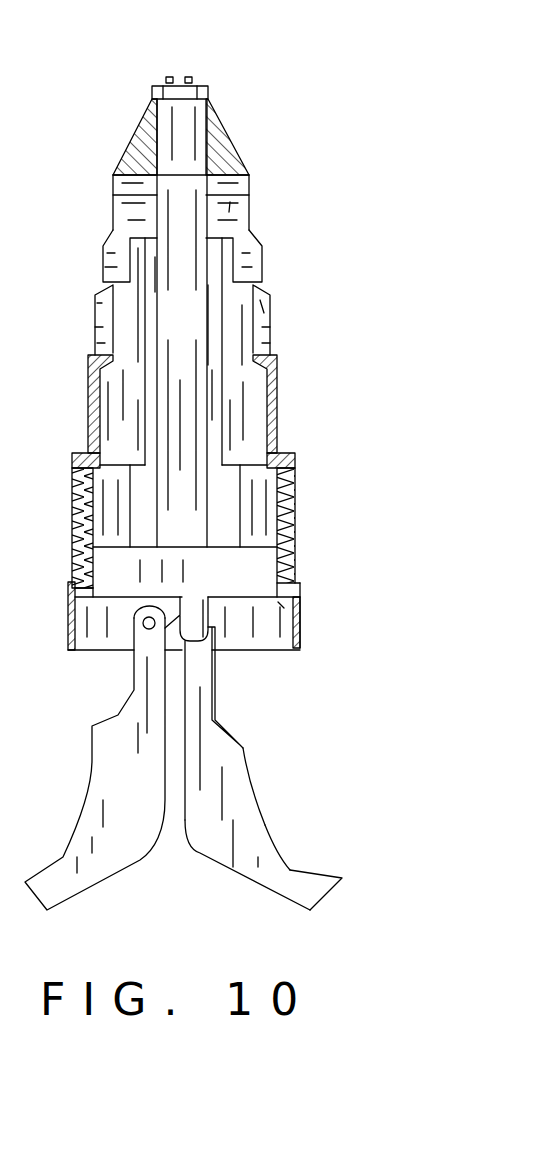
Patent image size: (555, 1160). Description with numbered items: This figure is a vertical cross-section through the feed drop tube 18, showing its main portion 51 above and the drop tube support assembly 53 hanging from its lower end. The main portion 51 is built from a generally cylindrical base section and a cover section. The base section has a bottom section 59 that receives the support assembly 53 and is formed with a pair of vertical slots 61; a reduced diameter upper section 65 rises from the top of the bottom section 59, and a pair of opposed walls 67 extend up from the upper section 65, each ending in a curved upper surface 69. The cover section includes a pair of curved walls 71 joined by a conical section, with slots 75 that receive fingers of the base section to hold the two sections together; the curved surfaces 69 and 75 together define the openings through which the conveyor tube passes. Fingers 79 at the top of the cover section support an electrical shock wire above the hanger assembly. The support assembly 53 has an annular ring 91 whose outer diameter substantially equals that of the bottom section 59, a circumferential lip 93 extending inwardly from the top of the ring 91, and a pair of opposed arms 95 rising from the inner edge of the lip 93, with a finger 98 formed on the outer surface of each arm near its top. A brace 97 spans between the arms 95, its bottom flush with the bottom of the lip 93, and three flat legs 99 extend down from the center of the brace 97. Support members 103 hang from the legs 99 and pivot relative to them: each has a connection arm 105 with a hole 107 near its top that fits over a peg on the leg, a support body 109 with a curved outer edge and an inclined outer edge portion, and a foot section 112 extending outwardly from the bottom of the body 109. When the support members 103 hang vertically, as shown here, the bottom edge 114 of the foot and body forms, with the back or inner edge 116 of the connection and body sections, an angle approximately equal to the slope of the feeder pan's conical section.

The feed drop tube 18 is at (305, 328).
The main portion 51 is at (229, 190).
The drop tube support assembly 53 is at (213, 629).
The bottom section 59 is at (297, 543).
The vertical slots 61 is at (297, 477).
The upper section 65 is at (276, 395).
The opposed walls 67 is at (247, 320).
The curved upper surface 69 is at (262, 312).
The curved walls 71 is at (198, 320).
The slots / concave surface 75 is at (232, 210).
The fingers 79 is at (178, 77).
The annular ring 91 is at (67, 613).
The circumferential lip 93 is at (278, 602).
The opposed arms 95 is at (86, 512).
The brace 97 is at (243, 585).
The finger 98 is at (72, 488).
The legs 99 is at (133, 606).
The support members 103 is at (227, 775).
The connection section / arm 105 is at (215, 690).
The hole / inclined outer edge portion 107 is at (235, 738).
The support body 109 is at (266, 813).
The foot section 112 is at (315, 878).
The bottom edge 114 is at (268, 890).
The inner edge 116 is at (185, 792).